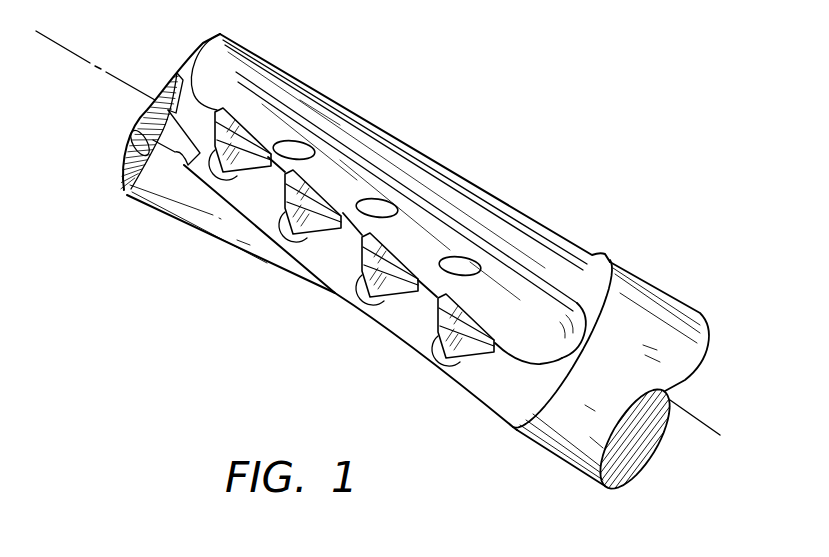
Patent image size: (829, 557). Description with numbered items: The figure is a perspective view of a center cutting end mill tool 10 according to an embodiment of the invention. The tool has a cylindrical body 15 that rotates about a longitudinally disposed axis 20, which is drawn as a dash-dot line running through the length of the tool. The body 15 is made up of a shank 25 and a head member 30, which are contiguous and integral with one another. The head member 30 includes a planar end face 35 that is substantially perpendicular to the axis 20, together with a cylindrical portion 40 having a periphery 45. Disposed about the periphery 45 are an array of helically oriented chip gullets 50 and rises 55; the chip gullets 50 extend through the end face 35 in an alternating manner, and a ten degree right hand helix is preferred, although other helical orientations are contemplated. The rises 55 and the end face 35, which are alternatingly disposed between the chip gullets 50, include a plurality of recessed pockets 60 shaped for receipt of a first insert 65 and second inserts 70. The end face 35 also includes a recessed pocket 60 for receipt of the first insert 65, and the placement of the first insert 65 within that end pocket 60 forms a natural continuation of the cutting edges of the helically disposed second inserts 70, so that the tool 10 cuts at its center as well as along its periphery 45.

The center cutting end mill tool 10 is at (620, 113).
The cylindrical body 15 is at (598, 225).
The longitudinally disposed axis 20 is at (65, 49).
The shank 25 is at (650, 307).
The head member 30 is at (432, 138).
The planar end face 35 is at (197, 53).
The cylindrical portion 40 is at (513, 235).
The periphery 45 is at (473, 190).
The chip gullets 50 is at (223, 65).
The rises 55 is at (383, 318).
The recessed pockets 60 is at (440, 330).
The first insert 65 is at (127, 191).
The second insert 70 is at (240, 120).